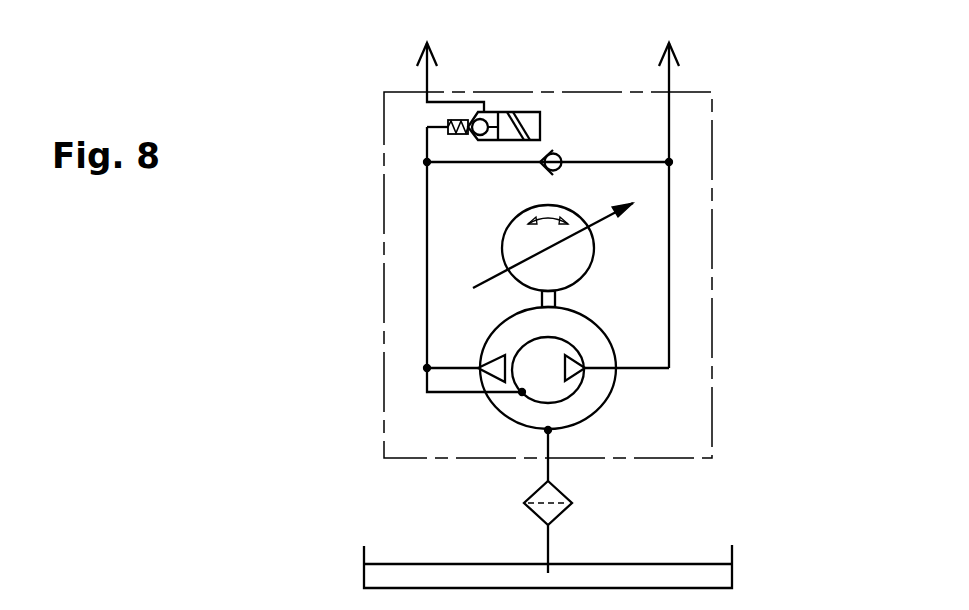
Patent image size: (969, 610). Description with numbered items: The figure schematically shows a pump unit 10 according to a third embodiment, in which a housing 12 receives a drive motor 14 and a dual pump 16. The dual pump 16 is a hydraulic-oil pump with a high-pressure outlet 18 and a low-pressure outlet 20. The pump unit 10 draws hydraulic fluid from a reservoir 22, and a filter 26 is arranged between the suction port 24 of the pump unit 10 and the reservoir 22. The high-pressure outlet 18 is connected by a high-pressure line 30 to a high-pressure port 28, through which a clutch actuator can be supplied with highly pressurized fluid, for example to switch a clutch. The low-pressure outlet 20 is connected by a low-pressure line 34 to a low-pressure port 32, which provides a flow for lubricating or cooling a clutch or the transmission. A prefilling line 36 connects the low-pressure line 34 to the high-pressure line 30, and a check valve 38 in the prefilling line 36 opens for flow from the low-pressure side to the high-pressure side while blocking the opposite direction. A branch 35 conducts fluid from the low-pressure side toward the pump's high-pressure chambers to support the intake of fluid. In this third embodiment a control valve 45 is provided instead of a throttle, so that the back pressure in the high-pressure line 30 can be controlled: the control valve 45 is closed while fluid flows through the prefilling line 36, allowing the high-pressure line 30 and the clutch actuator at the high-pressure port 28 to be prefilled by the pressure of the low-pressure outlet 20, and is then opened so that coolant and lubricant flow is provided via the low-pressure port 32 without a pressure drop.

The pump unit 10 is at (778, 71).
The housing 12 is at (712, 235).
The drive motor 14 is at (597, 258).
The dual pump 16 is at (593, 316).
The high-pressure outlet 18 is at (585, 368).
The low-pressure outlet 20 is at (478, 368).
The reservoir 22 is at (732, 552).
The suction port 24 is at (550, 460).
The filter 26 is at (537, 514).
The high-pressure port 28 is at (669, 92).
The high-pressure line 30 is at (669, 333).
The low-pressure port 32 is at (427, 92).
The low-pressure line 34 is at (427, 222).
The branch 35 is at (458, 392).
The prefilling line 36 is at (478, 162).
The check valve 38 is at (559, 155).
The control valve 45 is at (495, 112).